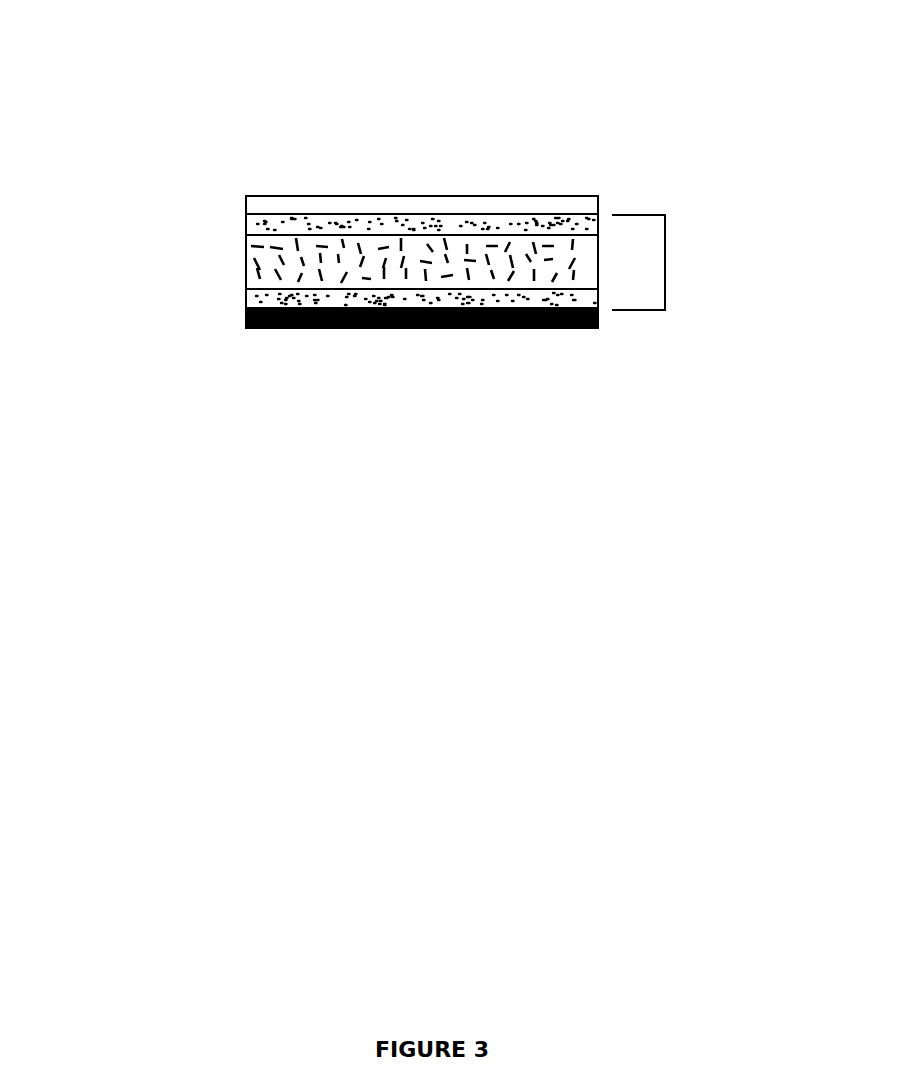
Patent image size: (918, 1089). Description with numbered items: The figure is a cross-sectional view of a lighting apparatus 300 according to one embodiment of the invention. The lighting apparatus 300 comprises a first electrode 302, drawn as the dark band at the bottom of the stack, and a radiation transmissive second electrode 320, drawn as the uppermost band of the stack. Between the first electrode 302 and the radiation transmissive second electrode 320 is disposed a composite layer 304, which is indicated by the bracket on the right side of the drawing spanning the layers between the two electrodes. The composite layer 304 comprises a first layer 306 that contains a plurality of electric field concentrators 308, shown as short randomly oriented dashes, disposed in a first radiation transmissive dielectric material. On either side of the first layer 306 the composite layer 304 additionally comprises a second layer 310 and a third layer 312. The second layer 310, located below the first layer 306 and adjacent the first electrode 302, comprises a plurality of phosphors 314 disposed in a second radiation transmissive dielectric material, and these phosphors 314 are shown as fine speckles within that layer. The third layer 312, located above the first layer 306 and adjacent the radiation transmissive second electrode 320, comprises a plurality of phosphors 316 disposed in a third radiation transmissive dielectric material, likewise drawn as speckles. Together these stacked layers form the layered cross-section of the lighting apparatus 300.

The lighting apparatus 300 is at (268, 96).
The first electrode 302 is at (245, 330).
The composite layer 304 is at (665, 253).
The first layer 306 is at (245, 250).
The electric field concentrators 308 is at (298, 271).
The second layer 310 is at (245, 303).
The third layer 312 is at (245, 218).
The phosphors 314 is at (590, 298).
The phosphors 316 is at (587, 223).
The radiation transmissive second electrode 320 is at (510, 196).